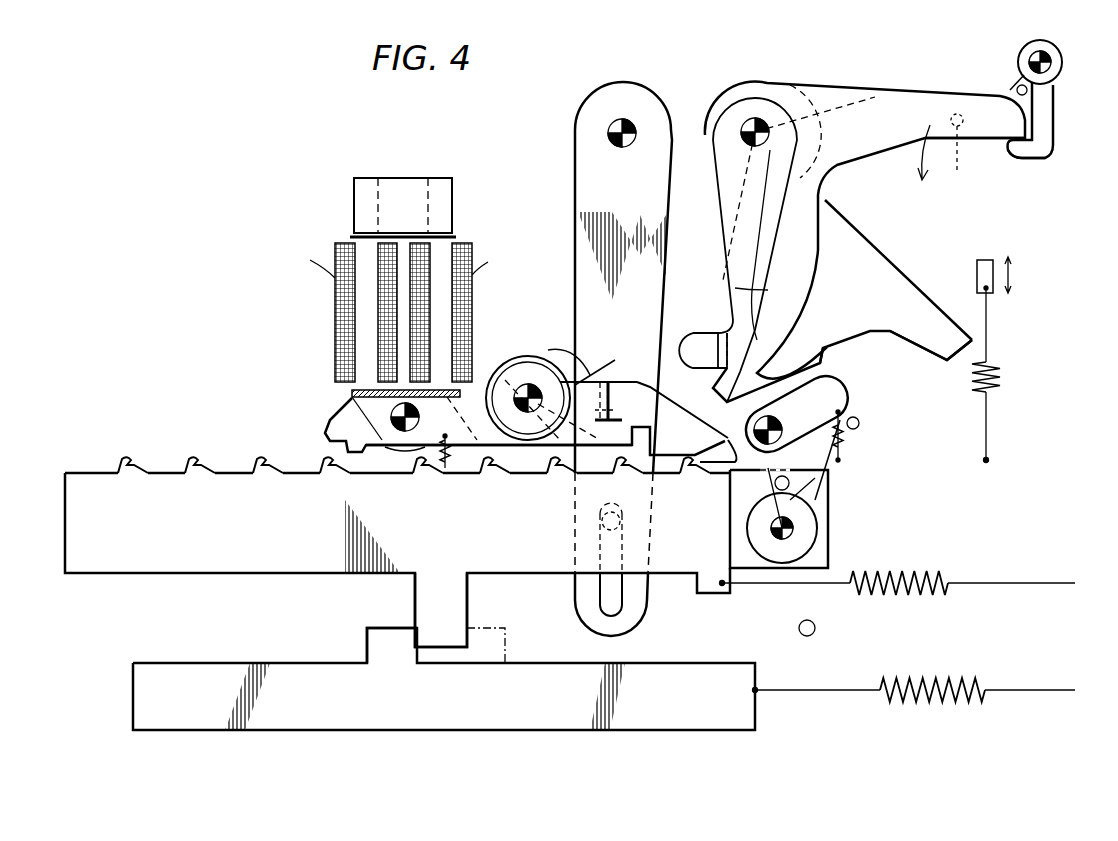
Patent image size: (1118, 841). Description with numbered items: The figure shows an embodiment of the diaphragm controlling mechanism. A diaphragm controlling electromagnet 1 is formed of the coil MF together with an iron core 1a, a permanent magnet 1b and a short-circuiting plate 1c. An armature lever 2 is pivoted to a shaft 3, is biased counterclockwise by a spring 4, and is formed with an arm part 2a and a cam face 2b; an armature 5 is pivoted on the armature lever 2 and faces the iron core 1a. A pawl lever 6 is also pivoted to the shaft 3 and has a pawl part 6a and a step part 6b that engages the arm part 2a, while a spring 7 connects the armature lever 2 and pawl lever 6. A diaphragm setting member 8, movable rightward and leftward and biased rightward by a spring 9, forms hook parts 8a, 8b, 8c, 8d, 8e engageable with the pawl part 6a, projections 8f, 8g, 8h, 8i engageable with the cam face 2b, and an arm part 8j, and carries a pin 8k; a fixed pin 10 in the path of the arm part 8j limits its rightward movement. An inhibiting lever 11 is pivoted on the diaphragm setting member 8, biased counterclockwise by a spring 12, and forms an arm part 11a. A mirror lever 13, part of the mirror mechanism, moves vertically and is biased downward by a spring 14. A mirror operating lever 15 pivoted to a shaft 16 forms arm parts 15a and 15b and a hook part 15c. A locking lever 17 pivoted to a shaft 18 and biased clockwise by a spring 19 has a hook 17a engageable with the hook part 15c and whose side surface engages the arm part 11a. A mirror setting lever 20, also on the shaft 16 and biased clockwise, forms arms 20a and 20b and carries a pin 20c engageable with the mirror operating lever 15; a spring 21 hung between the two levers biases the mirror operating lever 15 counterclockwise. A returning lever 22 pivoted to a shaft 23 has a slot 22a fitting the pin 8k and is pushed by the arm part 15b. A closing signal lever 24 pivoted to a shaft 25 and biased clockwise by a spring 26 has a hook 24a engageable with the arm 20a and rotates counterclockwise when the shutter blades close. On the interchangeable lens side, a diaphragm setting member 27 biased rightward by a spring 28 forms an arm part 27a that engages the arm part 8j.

The diaphragm controlling electromagnet 1 is at (402, 263).
The iron core 1a is at (365, 318).
The permanent magnet 1b is at (418, 190).
The short-circuiting plate 1c is at (448, 200).
The armature lever 2 is at (505, 436).
The arm part 2a is at (652, 387).
The cam face 2b is at (332, 440).
The shaft 3 is at (526, 380).
The spring 4 is at (446, 468).
The armature 5 is at (352, 394).
The pawl lever 6 is at (548, 348).
The pawl part 6a is at (720, 462).
The step part 6b is at (618, 405).
The spring 7 is at (580, 380).
The diaphragm setting member 8 is at (397, 548).
The hook part 8a is at (686, 466).
The hook part 8b is at (619, 466).
The hook part 8c is at (553, 466).
The hook part 8d is at (486, 466).
The hook part 8e is at (419, 466).
The projection 8f is at (326, 466).
The projection 8g is at (259, 466).
The projection 8h is at (191, 466).
The projection 8i is at (124, 466).
The arm part 8j is at (460, 598).
The pin 8k is at (602, 521).
The spring 9 is at (893, 595).
The fixed pin 10 is at (815, 628).
The inhibiting lever 11 is at (807, 494).
The arm part 11a is at (822, 455).
The spring 12 is at (800, 500).
The mirror lever 13 is at (978, 270).
The spring 14 is at (998, 374).
The mirror operating lever 15 is at (825, 250).
The arm part 15a is at (948, 355).
The arm part 15b is at (705, 345).
The hook part 15c is at (823, 365).
The shaft 16 is at (750, 122).
The locking lever 17 is at (819, 421).
The hook 17a is at (840, 400).
The shaft 18 is at (752, 430).
The spring 19 is at (850, 432).
The mirror setting lever 20 is at (850, 230).
The arm 20a is at (1010, 140).
The arm 20b is at (770, 300).
The pin 20c is at (955, 154).
The spring 21 is at (745, 235).
The returning lever 22 is at (597, 192).
The slot 22a is at (615, 605).
The shaft 23 is at (610, 128).
The closing signal lever 24 is at (1053, 134).
The hook 24a is at (1030, 158).
The shaft 25 is at (1030, 66).
The spring 26 is at (1052, 90).
The diaphragm setting member 27 is at (444, 674).
The arm part 27a is at (368, 645).
The spring 28 is at (908, 680).